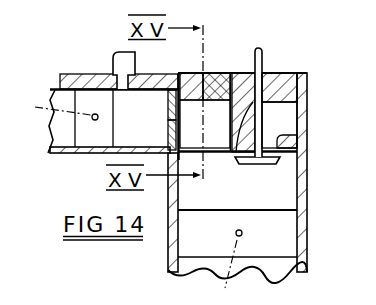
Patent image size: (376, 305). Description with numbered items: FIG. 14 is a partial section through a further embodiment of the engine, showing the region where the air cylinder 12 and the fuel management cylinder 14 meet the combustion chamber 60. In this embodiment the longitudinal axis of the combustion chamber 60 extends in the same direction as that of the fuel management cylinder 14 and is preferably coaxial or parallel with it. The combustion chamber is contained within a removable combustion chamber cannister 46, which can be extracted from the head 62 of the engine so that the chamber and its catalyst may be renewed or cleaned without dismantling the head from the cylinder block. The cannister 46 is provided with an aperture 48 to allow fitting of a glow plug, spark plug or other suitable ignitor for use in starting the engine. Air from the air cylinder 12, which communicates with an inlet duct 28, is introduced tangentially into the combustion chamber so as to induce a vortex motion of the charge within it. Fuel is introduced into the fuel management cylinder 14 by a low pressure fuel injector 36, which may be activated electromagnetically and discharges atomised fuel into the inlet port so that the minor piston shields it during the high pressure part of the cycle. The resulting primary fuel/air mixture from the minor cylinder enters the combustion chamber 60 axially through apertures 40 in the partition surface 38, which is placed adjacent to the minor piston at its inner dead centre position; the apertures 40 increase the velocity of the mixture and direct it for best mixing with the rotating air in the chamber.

The air cylinder 12 is at (283, 185).
The fuel management cylinder 14 is at (125, 137).
The inlet duct 28 is at (293, 120).
The low pressure fuel injector 36 is at (113, 63).
The partition surface 38 is at (168, 96).
The apertures 40 is at (170, 132).
The combustion chamber cannister 46 is at (231, 73).
The aperture 48 is at (216, 78).
The combustion chamber 60 is at (193, 112).
The head 62 is at (287, 88).